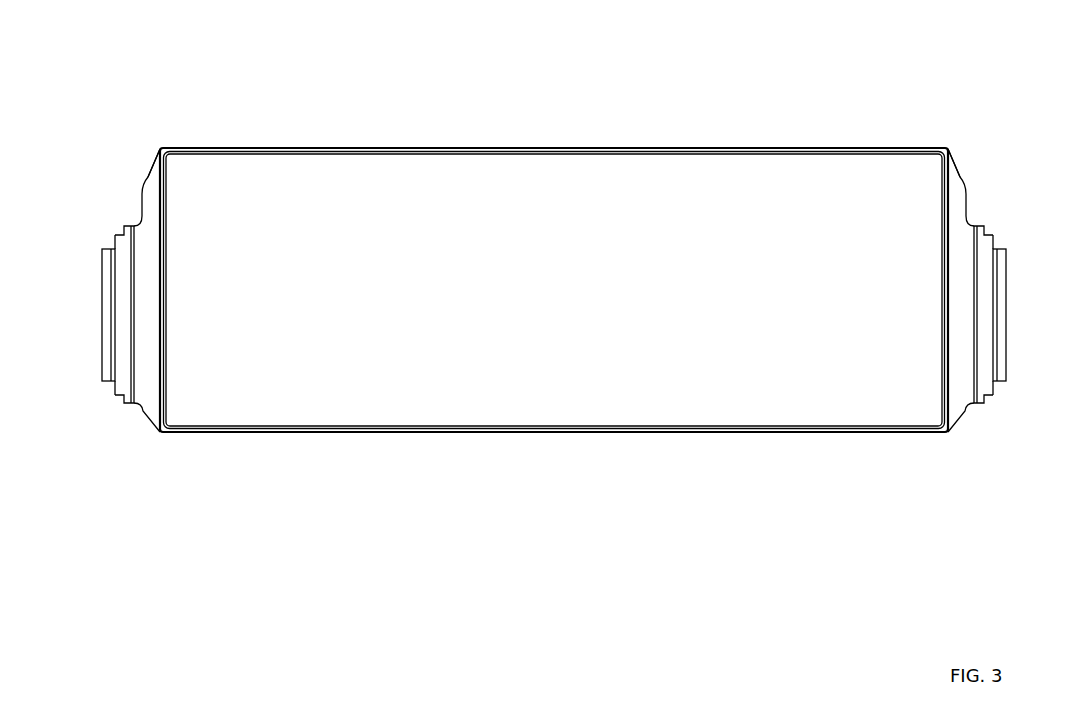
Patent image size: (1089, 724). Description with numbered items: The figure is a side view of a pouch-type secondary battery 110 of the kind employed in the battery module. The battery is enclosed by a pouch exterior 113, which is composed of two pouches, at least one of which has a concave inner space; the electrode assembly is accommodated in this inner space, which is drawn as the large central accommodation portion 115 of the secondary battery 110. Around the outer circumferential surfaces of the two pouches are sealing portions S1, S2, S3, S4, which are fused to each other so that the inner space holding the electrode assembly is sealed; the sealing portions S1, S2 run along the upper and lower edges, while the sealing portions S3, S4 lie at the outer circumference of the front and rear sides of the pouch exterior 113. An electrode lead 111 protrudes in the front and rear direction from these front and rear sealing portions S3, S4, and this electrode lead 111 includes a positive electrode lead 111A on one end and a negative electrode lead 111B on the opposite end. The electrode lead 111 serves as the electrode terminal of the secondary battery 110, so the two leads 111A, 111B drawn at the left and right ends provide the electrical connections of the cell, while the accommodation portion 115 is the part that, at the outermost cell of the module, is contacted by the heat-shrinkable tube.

The secondary battery 110 is at (291, 25).
The electrode lead 111 is at (741, 37).
The positive electrode lead 111A is at (102, 312).
The negative electrode lead 111B is at (1006, 312).
The pouch exterior 113 is at (162, 148).
The accommodation portion 115 is at (343, 178).
The sealing portion S1 is at (852, 148).
The sealing portion S2 is at (672, 433).
The sealing portion S3 is at (150, 188).
The sealing portion S4 is at (960, 188).